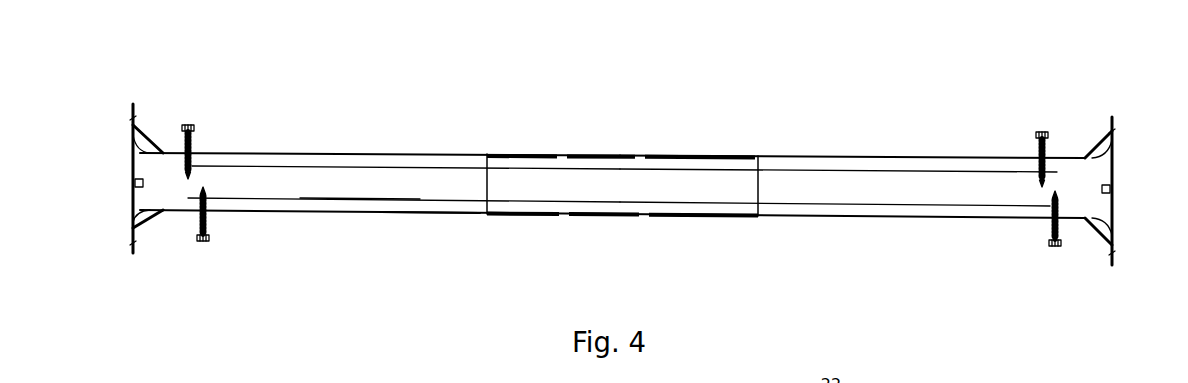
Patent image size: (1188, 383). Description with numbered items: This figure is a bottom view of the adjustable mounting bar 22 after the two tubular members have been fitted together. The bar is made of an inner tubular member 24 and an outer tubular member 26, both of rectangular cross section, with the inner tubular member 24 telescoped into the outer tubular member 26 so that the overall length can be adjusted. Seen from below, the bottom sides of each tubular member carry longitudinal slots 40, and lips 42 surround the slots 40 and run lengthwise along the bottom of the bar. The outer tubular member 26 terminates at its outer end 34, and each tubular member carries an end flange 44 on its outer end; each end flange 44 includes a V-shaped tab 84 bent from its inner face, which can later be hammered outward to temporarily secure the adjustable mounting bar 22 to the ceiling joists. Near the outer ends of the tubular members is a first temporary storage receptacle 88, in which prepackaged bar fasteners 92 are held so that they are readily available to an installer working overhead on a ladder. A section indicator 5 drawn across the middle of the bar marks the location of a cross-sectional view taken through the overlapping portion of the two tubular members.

The adjustable mounting bar 22 is at (817, 108).
The inner tubular member 24 is at (292, 192).
The outer tubular member 26 is at (886, 199).
The outer end of the outer tubular member 34 is at (1116, 157).
The longitudinal slots 40 is at (365, 187).
The lips 42 is at (423, 203).
The end flange 44 is at (1116, 128).
The V-shaped tab 84 is at (131, 183).
The first temporary storage receptacle 88 is at (1038, 158).
The bar fasteners 92 is at (193, 124).
The section line 5- 5 is at (619, 273).